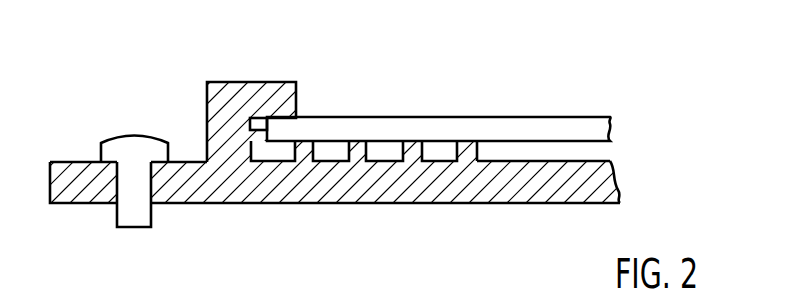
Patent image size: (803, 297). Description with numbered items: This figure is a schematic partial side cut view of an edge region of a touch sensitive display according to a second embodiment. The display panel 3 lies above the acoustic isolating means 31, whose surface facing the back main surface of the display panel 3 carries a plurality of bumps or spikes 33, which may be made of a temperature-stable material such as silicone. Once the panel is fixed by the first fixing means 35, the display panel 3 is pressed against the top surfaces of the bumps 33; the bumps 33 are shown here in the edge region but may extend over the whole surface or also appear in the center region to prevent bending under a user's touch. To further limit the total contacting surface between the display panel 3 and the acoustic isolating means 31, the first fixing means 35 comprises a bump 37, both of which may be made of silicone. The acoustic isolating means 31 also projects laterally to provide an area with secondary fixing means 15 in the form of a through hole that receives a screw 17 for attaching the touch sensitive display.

The display panel 3 is at (580, 114).
The secondary fixing means 15 is at (110, 205).
The screw 17 is at (124, 137).
The acoustic isolating means 31 is at (285, 210).
The bumps or spikes 33 is at (364, 134).
The first fixing means 35 is at (237, 81).
The bump 37 is at (263, 117).